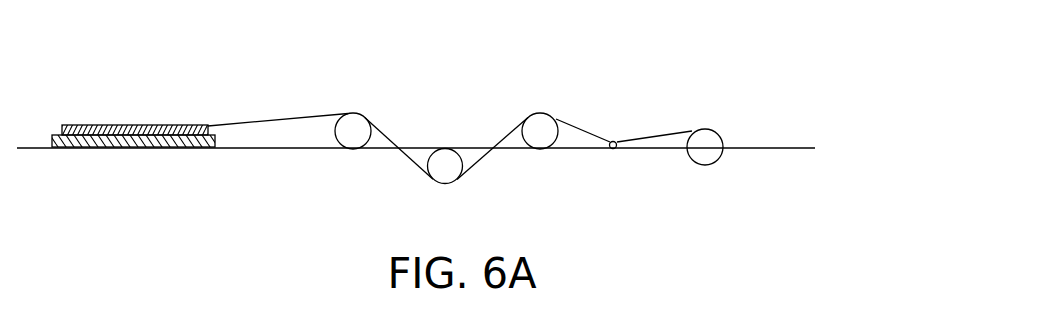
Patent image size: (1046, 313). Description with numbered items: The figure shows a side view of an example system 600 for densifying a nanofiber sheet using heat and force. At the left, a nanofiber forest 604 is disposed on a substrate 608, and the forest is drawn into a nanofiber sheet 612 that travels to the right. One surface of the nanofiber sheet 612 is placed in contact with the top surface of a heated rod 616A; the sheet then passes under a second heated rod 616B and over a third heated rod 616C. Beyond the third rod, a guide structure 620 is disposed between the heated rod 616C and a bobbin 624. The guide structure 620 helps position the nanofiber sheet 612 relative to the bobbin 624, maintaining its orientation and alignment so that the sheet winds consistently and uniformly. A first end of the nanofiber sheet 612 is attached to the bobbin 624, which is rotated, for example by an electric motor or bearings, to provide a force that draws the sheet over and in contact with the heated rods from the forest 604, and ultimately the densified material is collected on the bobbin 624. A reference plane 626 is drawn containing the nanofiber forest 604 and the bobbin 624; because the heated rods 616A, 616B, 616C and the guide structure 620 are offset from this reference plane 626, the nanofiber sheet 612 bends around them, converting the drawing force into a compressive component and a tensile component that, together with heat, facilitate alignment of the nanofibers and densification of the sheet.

The system 600 is at (818, 88).
The nanofiber forest 604 is at (128, 125).
The substrate 608 is at (133, 147).
The nanofiber sheet 612 is at (285, 118).
The heated rod 616A is at (355, 113).
The second heated rod 616B is at (448, 183).
The third heated rod 616C is at (542, 113).
The guide structure 620 is at (615, 141).
The bobbin 624 is at (711, 128).
The reference plane 626 is at (760, 150).